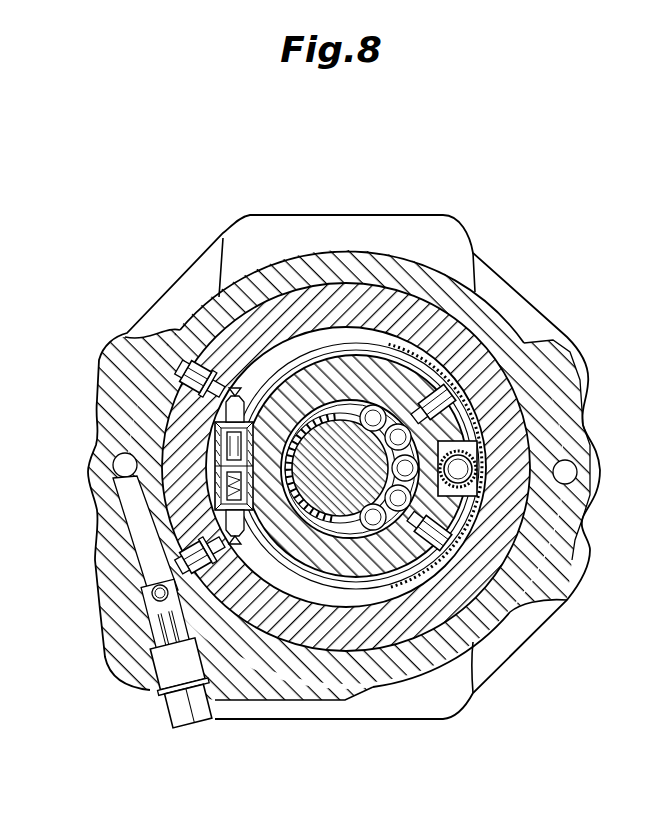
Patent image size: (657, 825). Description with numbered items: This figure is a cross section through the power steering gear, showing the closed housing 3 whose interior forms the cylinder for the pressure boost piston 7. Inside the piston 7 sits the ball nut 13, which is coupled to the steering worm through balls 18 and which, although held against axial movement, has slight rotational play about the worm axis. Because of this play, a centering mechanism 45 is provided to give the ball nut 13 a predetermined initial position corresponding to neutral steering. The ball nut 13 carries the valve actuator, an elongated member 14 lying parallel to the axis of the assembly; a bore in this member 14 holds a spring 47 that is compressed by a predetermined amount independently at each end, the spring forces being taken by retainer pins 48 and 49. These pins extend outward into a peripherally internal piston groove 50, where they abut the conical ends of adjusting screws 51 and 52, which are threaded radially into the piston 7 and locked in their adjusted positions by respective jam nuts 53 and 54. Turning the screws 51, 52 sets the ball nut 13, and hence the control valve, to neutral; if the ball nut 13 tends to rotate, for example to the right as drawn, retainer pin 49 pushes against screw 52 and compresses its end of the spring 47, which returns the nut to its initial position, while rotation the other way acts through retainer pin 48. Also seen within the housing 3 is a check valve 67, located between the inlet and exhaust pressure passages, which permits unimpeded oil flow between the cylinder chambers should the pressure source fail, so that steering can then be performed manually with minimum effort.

The housing 3 is at (373, 272).
The pressure boost piston 7 is at (393, 308).
The ball nut 13 is at (390, 387).
The elongated member 14 is at (222, 442).
The balls 18 is at (442, 373).
The centering mechanism 45 is at (107, 236).
The spring 47 is at (222, 463).
The retainer pin 48 is at (222, 505).
The retainer pin 49 is at (195, 390).
The peripherally internal piston groove 50 is at (287, 357).
The adjusting screw 51 is at (238, 552).
The adjusting screw 52 is at (237, 382).
The jam nut 53 is at (205, 562).
The jam nut 54 is at (195, 365).
The check valve 67 is at (156, 598).